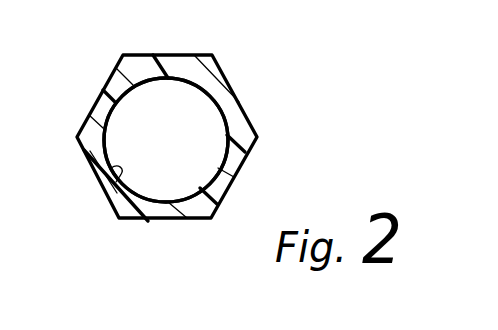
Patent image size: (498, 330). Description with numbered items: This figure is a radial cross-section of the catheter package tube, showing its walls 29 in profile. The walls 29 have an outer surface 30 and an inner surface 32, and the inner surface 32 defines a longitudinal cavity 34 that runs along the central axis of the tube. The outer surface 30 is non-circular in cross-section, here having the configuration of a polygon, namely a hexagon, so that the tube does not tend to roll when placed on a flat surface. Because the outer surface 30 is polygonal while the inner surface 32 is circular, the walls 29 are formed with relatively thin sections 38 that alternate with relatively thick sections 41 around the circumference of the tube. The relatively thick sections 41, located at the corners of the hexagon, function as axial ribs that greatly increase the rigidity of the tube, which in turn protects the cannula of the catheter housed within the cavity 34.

The walls 29 is at (168, 212).
The outer surface 30 is at (99, 103).
The inner surface 32 is at (117, 193).
The longitudinal cavity 34 is at (161, 172).
The relatively thin sections 38 is at (246, 87).
The relatively thick sections 41 is at (218, 50).